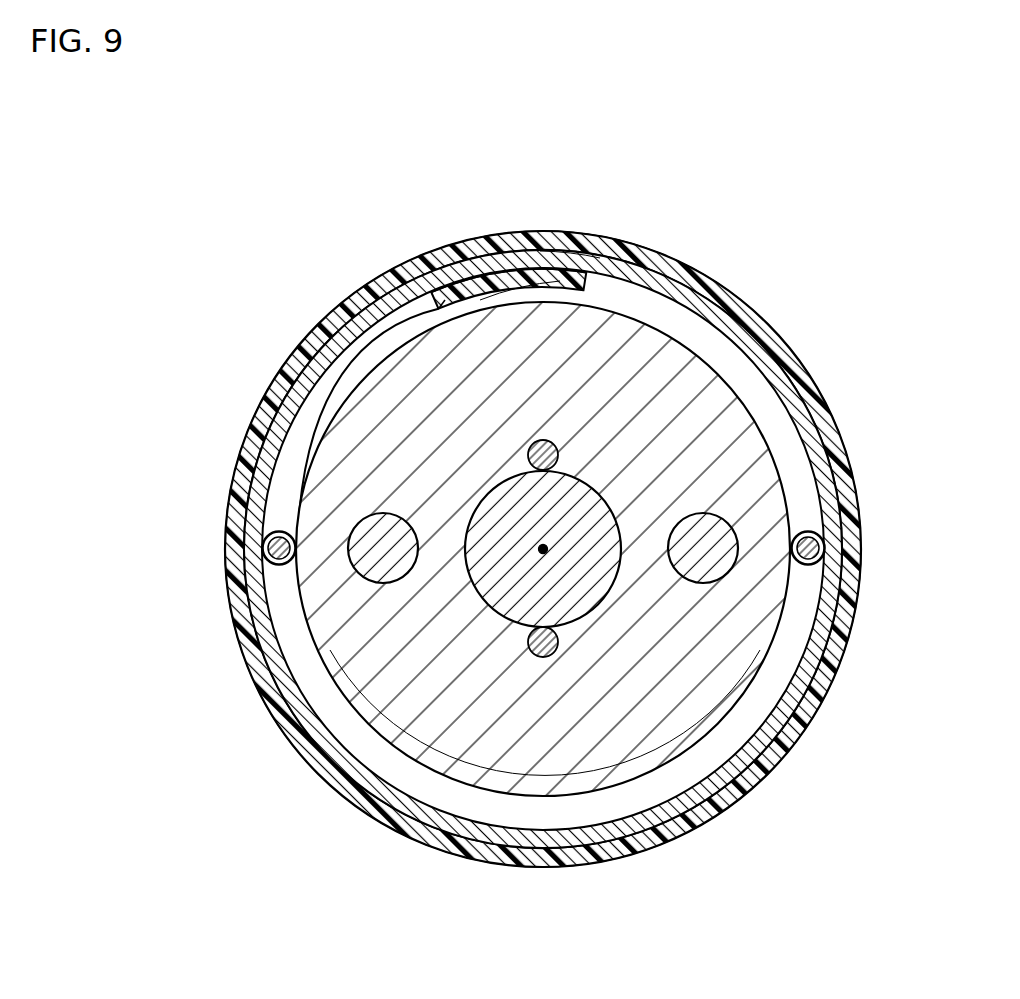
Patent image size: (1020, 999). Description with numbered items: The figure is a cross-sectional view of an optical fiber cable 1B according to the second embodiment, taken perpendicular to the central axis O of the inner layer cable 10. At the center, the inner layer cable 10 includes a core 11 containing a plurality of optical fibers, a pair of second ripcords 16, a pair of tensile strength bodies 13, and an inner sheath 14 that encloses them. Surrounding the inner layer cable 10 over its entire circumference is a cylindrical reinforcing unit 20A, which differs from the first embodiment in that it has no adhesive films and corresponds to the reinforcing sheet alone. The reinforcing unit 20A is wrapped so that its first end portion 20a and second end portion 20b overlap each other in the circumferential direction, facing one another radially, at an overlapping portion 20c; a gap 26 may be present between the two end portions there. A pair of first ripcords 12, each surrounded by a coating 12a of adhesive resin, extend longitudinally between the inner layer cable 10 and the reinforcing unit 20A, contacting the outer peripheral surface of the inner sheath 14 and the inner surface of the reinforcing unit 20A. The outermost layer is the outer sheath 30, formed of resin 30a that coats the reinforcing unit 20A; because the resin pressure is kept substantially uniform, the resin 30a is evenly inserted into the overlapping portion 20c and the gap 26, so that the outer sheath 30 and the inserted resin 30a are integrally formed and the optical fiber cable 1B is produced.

The optical fiber cable 1B is at (231, 196).
The inner layer cable 10 is at (545, 796).
The core 11 is at (498, 595).
The first ripcord 12 is at (276, 556).
The coating 12a is at (277, 534).
The tensile strength body 13 is at (376, 566).
The inner sheath 14 is at (628, 745).
The second ripcord 16 is at (536, 452).
The reinforcing unit 20A is at (772, 318).
The first end portion 20a is at (487, 262).
The second end portion 20b is at (550, 307).
The overlapping portion 20c is at (567, 248).
The gap 26 is at (463, 262).
The outer sheath 30 is at (832, 425).
The resin 30a is at (517, 272).
The central axis O is at (543, 552).